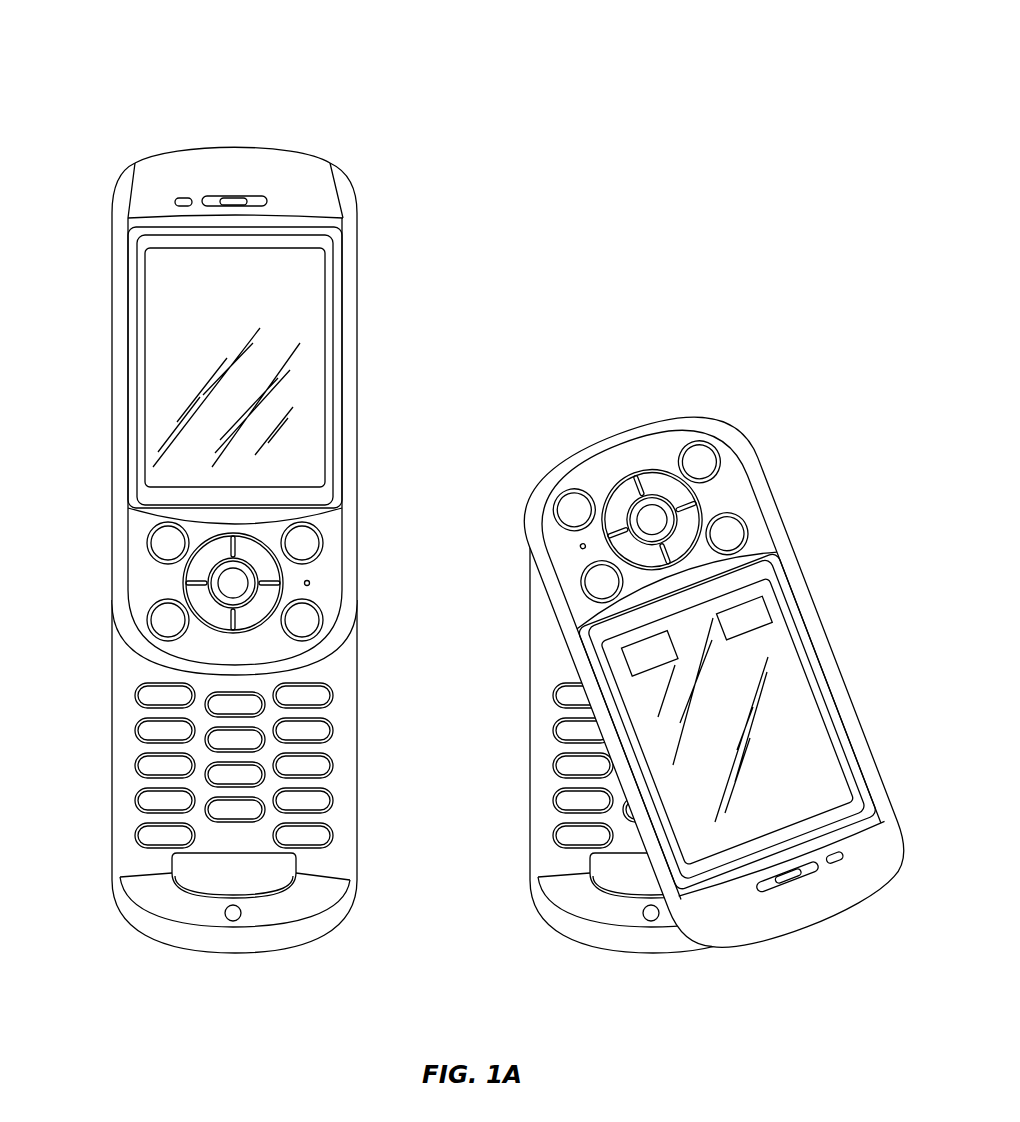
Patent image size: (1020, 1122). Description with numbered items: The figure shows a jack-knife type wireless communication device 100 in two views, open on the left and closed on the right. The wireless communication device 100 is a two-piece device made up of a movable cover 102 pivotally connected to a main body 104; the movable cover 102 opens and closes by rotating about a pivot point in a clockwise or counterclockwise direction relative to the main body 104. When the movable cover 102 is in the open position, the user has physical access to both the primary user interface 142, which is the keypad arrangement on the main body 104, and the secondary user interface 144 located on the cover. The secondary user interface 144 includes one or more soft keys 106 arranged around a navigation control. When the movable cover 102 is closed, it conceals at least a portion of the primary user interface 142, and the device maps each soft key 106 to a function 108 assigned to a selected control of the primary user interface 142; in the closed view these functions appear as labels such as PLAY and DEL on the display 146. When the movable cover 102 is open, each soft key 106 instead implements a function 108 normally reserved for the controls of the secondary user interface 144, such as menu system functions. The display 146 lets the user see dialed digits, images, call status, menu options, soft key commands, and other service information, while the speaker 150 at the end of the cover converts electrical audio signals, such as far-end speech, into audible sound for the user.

The wireless communication device 100 is at (268, 76).
The movable cover 102 is at (354, 198).
The main body 104 is at (283, 950).
The soft key 106 is at (301, 543).
The function 108 is at (765, 605).
The primary user interface 142 is at (121, 775).
The secondary user interface 144 is at (330, 578).
The display 146 is at (327, 316).
The speaker 150 is at (232, 196).